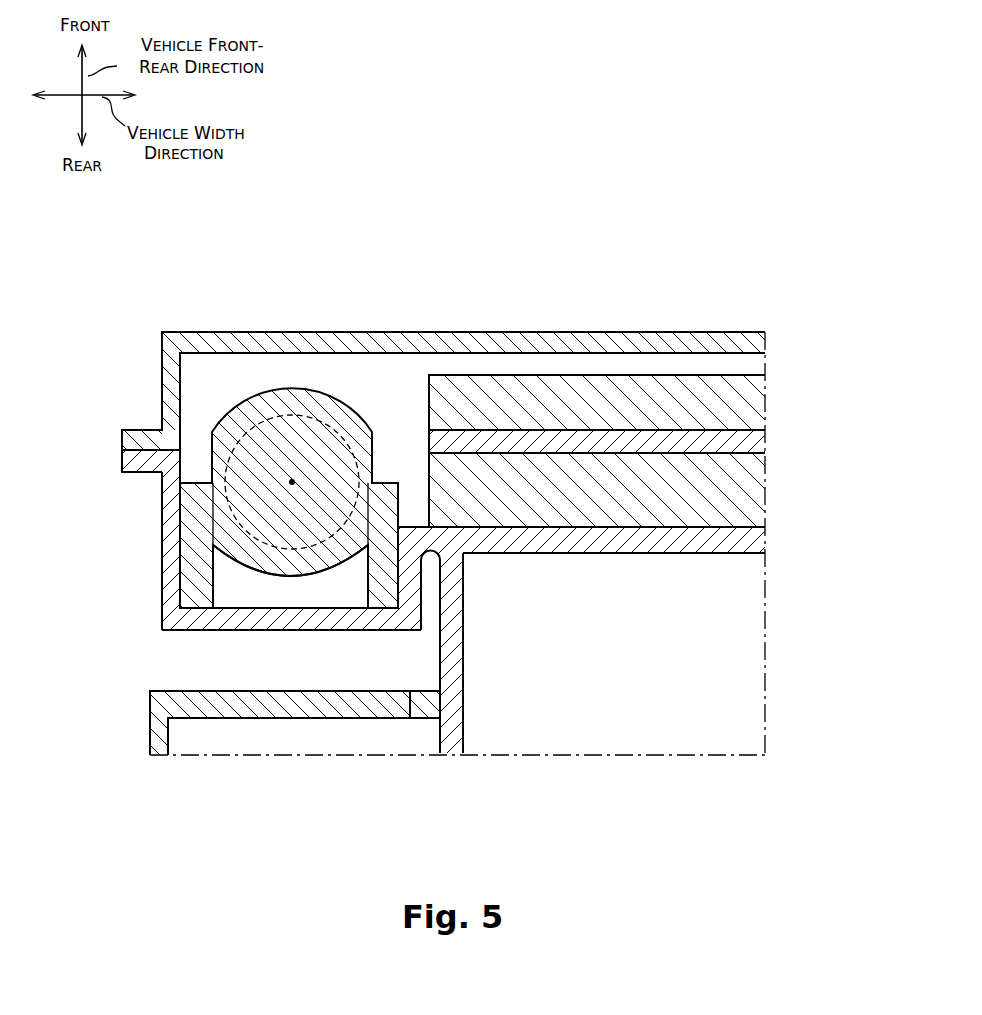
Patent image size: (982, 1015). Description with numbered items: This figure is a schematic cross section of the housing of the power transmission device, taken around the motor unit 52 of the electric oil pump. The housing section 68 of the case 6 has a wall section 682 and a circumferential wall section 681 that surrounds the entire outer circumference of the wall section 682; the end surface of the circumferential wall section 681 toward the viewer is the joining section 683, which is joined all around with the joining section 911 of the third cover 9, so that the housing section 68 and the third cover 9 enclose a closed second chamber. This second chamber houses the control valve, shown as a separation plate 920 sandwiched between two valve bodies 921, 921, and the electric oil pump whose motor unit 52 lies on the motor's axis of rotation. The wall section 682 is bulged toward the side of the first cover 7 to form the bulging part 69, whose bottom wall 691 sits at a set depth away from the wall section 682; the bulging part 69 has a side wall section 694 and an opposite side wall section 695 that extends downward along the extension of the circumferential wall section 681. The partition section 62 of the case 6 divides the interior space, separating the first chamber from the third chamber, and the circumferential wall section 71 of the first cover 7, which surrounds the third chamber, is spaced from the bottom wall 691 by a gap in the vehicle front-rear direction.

The third cover 9 is at (160, 332).
The joining section 911 is at (121, 441).
The housing section 68 is at (159, 488).
The circumferential wall section 681 is at (176, 535).
The wall section 682 is at (735, 554).
The joining section 683 is at (121, 462).
The bottom wall 691 is at (262, 631).
The side wall section 694 is at (368, 586).
The opposite side wall section 695 is at (170, 583).
The bulging part 69 is at (272, 605).
The motor unit 52 is at (295, 425).
The case 6 is at (439, 699).
The partition section 62 is at (434, 751).
The first cover 7 is at (248, 743).
The circumferential wall section 71 is at (252, 720).
The separation plate 920 is at (757, 447).
The valve body 921 is at (750, 397).